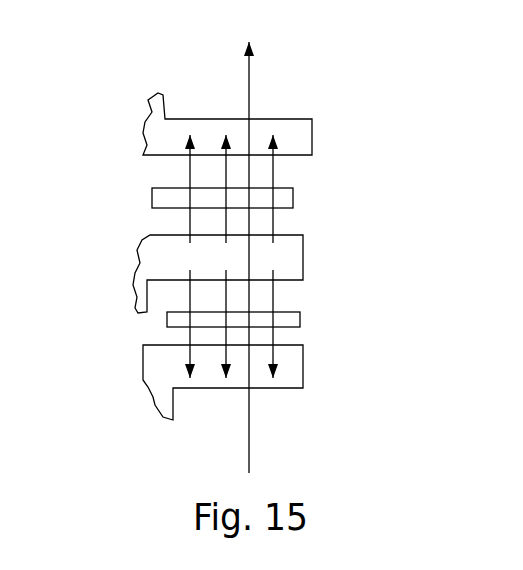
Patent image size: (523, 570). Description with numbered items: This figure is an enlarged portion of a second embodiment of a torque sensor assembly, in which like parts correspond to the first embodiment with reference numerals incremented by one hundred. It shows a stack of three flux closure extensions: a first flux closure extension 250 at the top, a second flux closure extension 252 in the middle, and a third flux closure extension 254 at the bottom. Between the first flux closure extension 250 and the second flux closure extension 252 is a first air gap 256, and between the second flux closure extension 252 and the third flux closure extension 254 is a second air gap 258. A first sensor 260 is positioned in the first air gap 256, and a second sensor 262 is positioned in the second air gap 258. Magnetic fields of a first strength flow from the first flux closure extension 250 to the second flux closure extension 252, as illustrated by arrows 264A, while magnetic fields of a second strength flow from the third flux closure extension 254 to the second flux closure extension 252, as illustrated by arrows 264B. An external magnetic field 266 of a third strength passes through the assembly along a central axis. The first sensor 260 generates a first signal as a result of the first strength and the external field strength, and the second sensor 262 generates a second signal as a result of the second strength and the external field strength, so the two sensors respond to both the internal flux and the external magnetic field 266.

The first flux closure extension 250 is at (312, 137).
The second flux closure extension 252 is at (303, 257).
The third flux closure extension 254 is at (303, 365).
The first air gap 256 is at (322, 177).
The second air gap 258 is at (312, 333).
The first sensor 260 is at (293, 197).
The second sensor 262 is at (300, 320).
The arrows 264A is at (147, 175).
The arrows 264B is at (165, 338).
The external magnetic field 266 is at (252, 85).